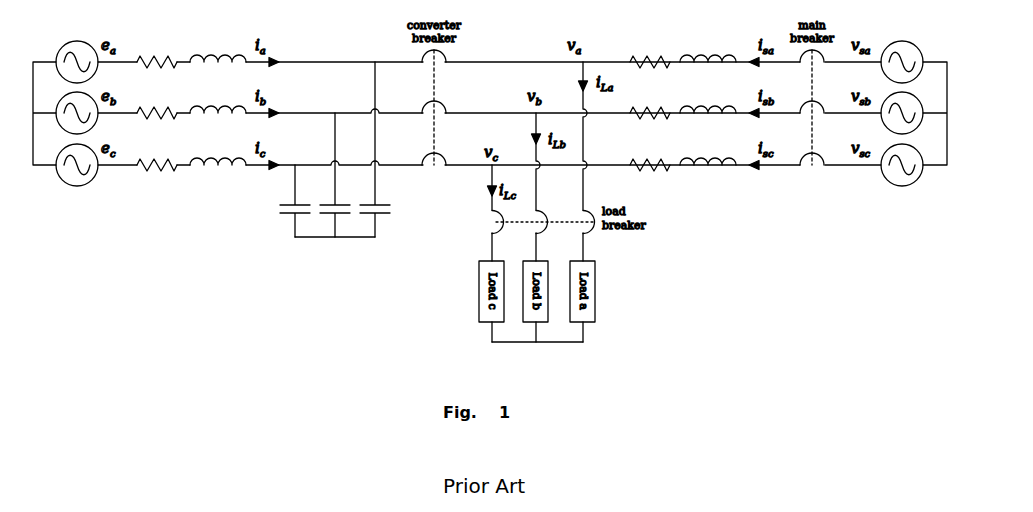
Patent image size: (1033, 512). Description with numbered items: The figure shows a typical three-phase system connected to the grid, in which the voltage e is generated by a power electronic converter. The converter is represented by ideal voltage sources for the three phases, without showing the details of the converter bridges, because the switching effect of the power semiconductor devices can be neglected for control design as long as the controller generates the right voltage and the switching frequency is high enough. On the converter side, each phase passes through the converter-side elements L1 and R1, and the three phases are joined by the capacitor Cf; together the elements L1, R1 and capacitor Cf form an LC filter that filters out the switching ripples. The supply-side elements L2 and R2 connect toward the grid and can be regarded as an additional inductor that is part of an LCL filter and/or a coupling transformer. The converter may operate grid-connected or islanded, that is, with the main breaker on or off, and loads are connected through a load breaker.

The converter-side resistance R1 is at (157, 47).
The converter-side inductance L1 is at (218, 44).
The supply-side resistance R2 is at (650, 47).
The supply-side inductance L2 is at (708, 44).
The capacitor Cf is at (320, 149).